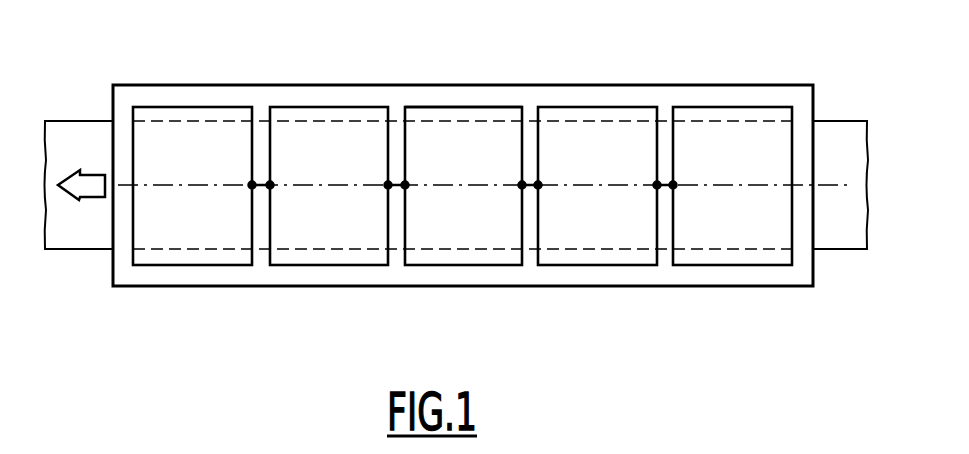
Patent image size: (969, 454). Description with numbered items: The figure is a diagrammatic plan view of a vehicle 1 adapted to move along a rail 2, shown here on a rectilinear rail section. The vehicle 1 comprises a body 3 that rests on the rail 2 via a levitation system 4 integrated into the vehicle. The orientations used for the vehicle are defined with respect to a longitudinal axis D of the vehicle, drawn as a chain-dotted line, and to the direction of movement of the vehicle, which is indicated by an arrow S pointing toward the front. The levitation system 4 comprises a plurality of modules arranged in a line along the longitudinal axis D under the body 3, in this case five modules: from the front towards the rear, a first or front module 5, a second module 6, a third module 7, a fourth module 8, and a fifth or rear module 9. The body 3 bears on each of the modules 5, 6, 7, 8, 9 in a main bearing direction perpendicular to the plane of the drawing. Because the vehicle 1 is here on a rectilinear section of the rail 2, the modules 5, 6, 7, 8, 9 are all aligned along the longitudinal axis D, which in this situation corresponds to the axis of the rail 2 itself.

The vehicle 1 is at (481, 178).
The rail 2 is at (75, 120).
The body 3 is at (556, 85).
The levitation system 4 is at (449, 100).
The first or front module 5 is at (200, 228).
The second module 6 is at (327, 228).
The third module 7 is at (462, 228).
The fourth module 8 is at (608, 228).
The fifth or rear module 9 is at (738, 228).
The longitudinal axis D is at (312, 185).
The direction of movement S is at (73, 190).